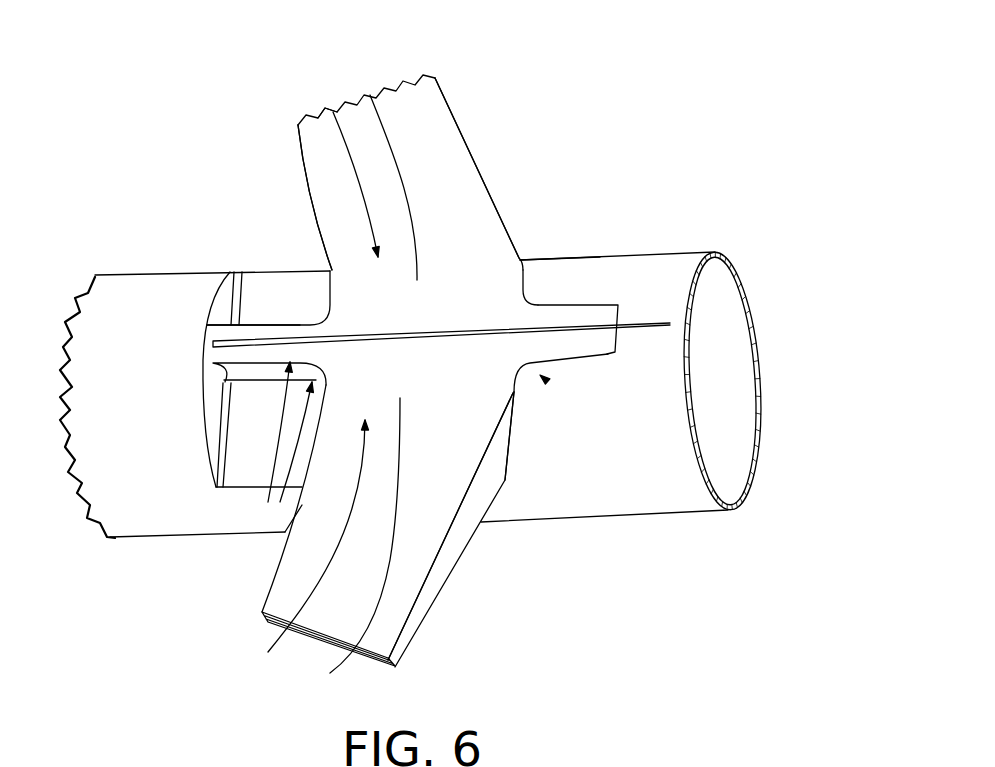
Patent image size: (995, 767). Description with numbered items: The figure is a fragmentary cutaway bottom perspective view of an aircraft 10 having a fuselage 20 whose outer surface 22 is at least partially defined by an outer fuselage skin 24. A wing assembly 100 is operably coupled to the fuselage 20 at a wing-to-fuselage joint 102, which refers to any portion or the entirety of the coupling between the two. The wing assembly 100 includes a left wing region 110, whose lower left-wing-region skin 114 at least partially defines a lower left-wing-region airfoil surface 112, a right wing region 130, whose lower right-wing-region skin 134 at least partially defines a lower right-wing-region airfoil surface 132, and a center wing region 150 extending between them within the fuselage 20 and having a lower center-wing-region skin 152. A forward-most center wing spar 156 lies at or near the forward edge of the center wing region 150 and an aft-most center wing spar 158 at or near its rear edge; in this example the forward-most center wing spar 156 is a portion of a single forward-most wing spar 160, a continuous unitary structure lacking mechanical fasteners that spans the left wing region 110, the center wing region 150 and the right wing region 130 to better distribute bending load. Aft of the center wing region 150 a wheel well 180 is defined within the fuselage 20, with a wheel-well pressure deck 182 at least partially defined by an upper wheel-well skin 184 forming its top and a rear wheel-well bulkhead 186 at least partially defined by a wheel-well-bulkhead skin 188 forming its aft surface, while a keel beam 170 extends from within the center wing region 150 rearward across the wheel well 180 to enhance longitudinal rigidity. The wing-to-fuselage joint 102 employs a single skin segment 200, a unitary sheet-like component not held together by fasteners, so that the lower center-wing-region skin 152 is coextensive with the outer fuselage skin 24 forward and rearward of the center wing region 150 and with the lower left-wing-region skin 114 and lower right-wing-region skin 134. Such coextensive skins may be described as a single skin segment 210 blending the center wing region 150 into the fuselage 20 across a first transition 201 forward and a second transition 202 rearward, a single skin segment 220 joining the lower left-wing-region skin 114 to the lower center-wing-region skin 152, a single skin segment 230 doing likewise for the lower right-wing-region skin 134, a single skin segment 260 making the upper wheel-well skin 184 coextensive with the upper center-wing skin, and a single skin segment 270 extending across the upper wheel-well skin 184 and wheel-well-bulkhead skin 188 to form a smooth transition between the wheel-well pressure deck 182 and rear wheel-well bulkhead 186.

The aircraft 10 is at (125, 150).
The fuselage 20 is at (602, 237).
The outer surface 22 is at (647, 250).
The outer fuselage skin 24 is at (688, 252).
The wing assembly 100 is at (510, 197).
The wing-to-fuselage joint 102 is at (522, 465).
The left wing region 110 is at (417, 660).
The lower left-wing-region airfoil surface 112 is at (410, 565).
The lower left-wing-region skin 114 is at (422, 545).
The right wing region 130 is at (480, 148).
The lower right-wing-region airfoil surface 132 is at (437, 111).
The lower right-wing-region skin 134 is at (450, 130).
The center wing region 150 is at (520, 395).
The lower center-wing-region skin 152 is at (500, 413).
The forward-most center wing spar 156 is at (525, 291).
The aft-most center wing spar 158 is at (330, 287).
The single forward-most wing spar 160 is at (527, 260).
The keel beam 170 is at (593, 323).
The wheel well 180 is at (262, 283).
The wheel-well pressure deck 182 is at (278, 287).
The upper wheel-well skin 184 is at (293, 290).
The rear wheel-well bulkhead 186 is at (230, 300).
The wheel-well-bulkhead skin 188 is at (226, 440).
The single skin segment 200 is at (333, 112).
The first transition 201 is at (541, 376).
The second transition 202 is at (290, 508).
The single skin segment 210 is at (572, 345).
The single skin segment 220 is at (370, 96).
The single skin segment 230 is at (347, 553).
The single skin segment 260 is at (250, 487).
The single skin segment 270 is at (205, 417).